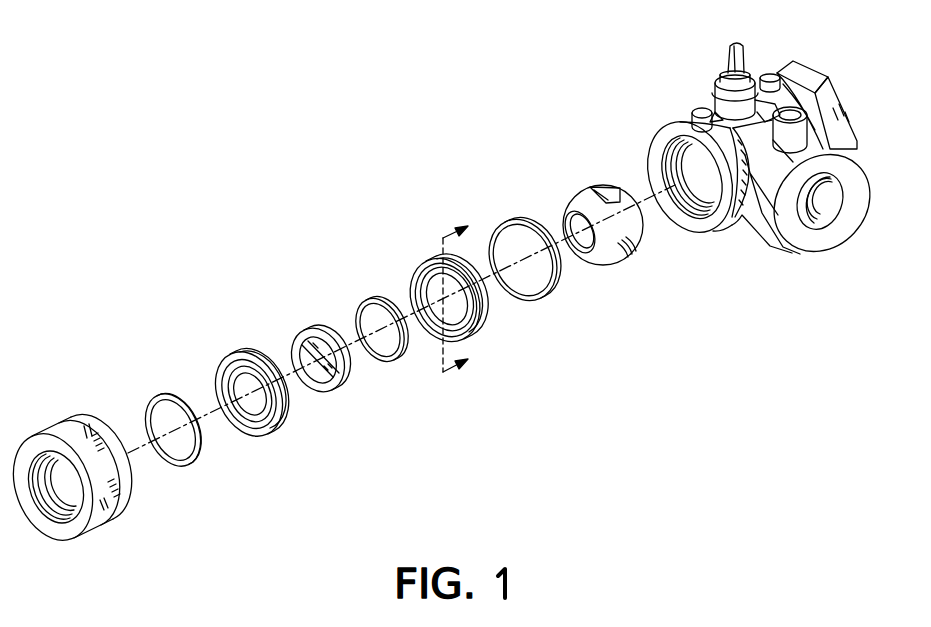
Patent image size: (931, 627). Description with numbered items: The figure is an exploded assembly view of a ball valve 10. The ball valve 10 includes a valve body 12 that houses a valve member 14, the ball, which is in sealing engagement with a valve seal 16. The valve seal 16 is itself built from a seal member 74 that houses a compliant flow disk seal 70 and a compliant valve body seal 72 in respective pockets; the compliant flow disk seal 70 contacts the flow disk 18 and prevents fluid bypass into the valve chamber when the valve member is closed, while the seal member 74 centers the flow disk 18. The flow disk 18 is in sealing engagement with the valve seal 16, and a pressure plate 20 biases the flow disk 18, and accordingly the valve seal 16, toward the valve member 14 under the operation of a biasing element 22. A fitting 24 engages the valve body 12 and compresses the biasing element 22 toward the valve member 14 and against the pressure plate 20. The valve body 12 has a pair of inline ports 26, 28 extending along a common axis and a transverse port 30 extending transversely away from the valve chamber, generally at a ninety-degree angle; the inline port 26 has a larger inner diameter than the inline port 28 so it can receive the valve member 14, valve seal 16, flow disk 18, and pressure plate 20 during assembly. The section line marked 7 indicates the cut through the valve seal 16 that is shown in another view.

The ball valve 10 is at (311, 170).
The valve body 12 is at (822, 76).
The valve member 14 is at (583, 198).
The valve seal 16 is at (332, 273).
The flow disk 18 is at (309, 329).
The pressure plate 20 is at (238, 353).
The biasing element 22 is at (160, 396).
The fitting 24 is at (76, 422).
The inline port 26 is at (735, 222).
The inline port 28 is at (855, 148).
The transverse port 30 is at (818, 238).
The compliant flow disk seal 70 is at (388, 364).
The compliant valve body seal 72 is at (547, 299).
The seal member 74 is at (480, 322).
The section line 7- 7 is at (462, 293).